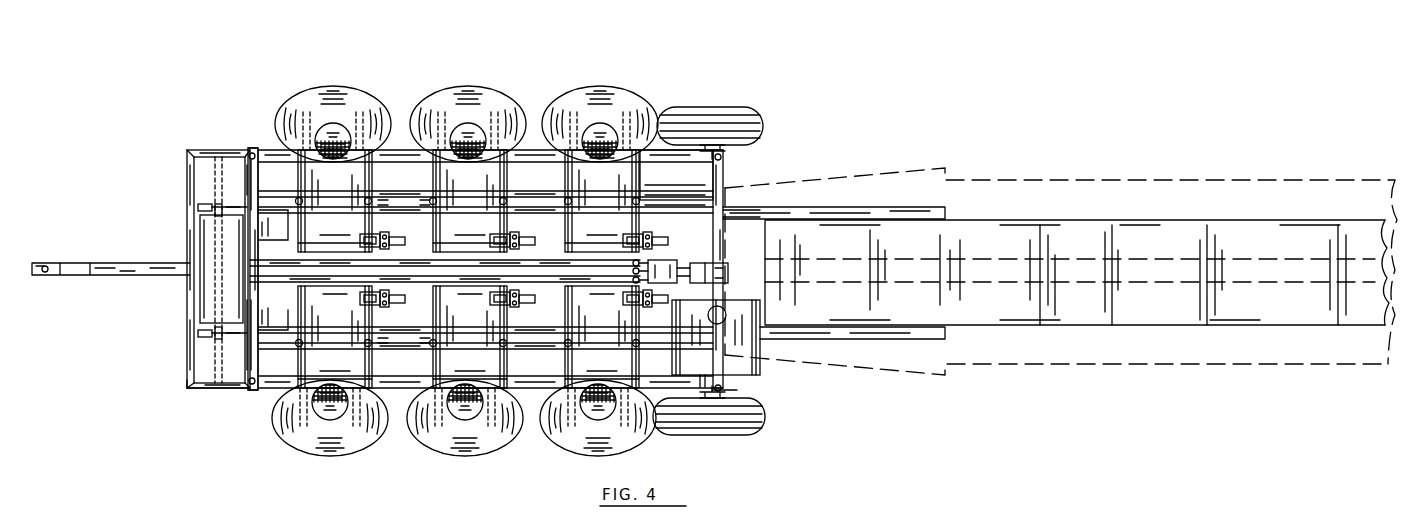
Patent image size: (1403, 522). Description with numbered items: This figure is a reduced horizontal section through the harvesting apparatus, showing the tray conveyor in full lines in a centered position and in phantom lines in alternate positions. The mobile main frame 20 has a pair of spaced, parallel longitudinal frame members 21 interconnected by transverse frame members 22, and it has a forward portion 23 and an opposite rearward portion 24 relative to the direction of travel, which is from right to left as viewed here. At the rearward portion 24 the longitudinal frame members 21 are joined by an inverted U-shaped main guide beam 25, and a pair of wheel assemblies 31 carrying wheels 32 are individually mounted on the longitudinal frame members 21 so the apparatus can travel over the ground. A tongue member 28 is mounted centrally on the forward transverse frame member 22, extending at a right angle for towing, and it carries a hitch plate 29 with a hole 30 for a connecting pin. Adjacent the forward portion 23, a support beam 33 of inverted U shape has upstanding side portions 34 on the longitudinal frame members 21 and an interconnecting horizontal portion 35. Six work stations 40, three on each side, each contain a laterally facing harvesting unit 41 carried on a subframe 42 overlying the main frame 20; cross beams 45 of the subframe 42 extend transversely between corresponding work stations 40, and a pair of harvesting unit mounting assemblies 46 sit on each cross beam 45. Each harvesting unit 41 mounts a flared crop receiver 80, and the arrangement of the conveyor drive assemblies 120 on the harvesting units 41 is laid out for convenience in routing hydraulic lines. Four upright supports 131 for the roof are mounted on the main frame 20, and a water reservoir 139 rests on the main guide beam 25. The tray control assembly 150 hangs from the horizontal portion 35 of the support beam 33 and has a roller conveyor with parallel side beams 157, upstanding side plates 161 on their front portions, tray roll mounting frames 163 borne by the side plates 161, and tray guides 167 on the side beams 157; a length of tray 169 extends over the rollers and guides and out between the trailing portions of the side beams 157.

The main frame 20 is at (207, 394).
The longitudinal frame members 21 is at (290, 150).
The transverse frame members 22 is at (188, 368).
The forward portion 23 is at (188, 164).
The rearward portion 24 is at (740, 200).
The main guide beam 25 is at (713, 180).
The tongue member 28 is at (145, 278).
The hitch plate 29 is at (52, 263).
The hole 30 is at (47, 273).
The wheel assemblies 31 is at (735, 148).
The wheels 32 is at (715, 108).
The support beam 33 is at (248, 366).
The upstanding side portions 34 is at (250, 150).
The horizontal portion 35 is at (243, 301).
The work stations 40 is at (355, 80).
The harvesting unit 41 is at (345, 180).
The subframe 42 is at (432, 185).
The cross beam 45 is at (298, 173).
The harvesting unit mounting assemblies 46 is at (565, 203).
The crop receiver 80 is at (340, 88).
The conveyor drive assembly 120 is at (390, 246).
The upright supports 131 is at (252, 154).
The water reservoir 139 is at (734, 355).
The tray control assembly 150 is at (920, 190).
The side beams 157 is at (845, 211).
The side plates 161 is at (242, 205).
The tray roll mounting frames 163 is at (205, 205).
The tray guides 167 is at (418, 216).
The tray 169 is at (1173, 300).